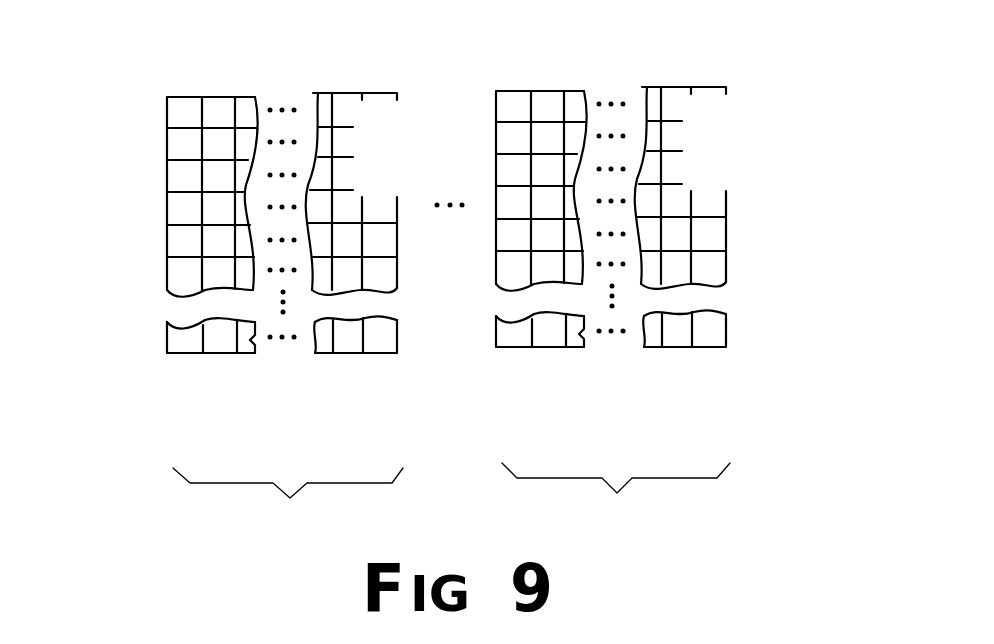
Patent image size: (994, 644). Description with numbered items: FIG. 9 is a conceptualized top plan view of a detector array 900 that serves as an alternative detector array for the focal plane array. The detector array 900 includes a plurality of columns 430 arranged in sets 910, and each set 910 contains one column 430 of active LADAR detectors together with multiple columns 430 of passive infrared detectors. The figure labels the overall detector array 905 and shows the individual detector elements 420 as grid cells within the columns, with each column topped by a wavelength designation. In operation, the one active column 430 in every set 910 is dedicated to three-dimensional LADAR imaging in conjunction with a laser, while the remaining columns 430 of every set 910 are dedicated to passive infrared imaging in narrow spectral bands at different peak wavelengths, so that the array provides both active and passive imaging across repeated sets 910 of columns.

The detector array 900 is at (118, 57).
The detector array 905 is at (438, 199).
The detector elements 420 is at (183, 272).
The column 430 is at (385, 355).
The set 910 is at (451, 502).